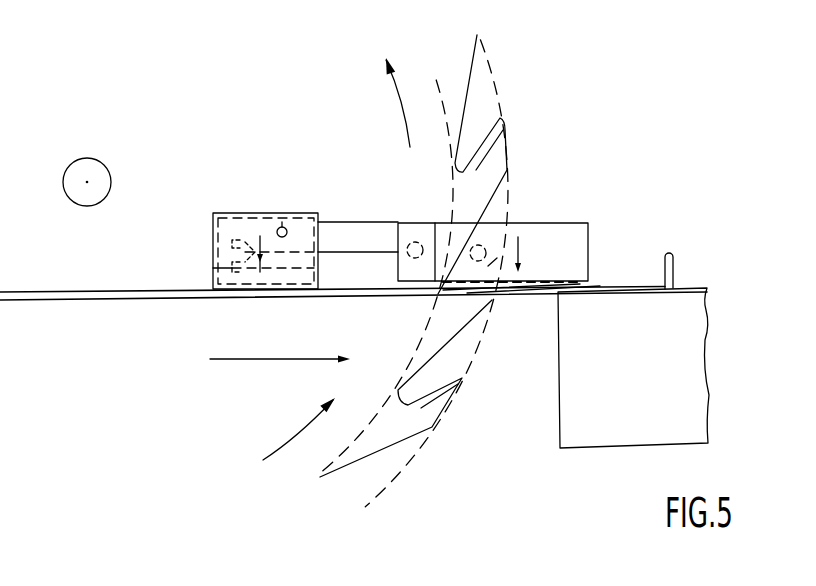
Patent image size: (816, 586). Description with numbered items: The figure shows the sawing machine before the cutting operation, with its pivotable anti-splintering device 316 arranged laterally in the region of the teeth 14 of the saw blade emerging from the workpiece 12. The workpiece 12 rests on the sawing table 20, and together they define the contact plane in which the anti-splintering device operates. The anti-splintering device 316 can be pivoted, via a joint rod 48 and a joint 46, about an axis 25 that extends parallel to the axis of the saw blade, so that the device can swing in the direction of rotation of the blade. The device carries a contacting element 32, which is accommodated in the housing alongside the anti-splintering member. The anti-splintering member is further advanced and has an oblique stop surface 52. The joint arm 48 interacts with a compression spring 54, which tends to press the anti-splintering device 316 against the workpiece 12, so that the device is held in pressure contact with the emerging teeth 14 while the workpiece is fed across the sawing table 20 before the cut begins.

The workpiece 12 is at (615, 430).
The teeth of the saw blade 14 is at (500, 120).
The sawing table 20 is at (677, 263).
The axis 25 is at (280, 212).
The contacting element 32 is at (415, 222).
The joint 46 is at (245, 247).
The joint rod 48 is at (466, 219).
The oblique stop surface 52 is at (520, 297).
The compression spring 54 is at (235, 280).
The anti-splintering device 316 is at (325, 147).